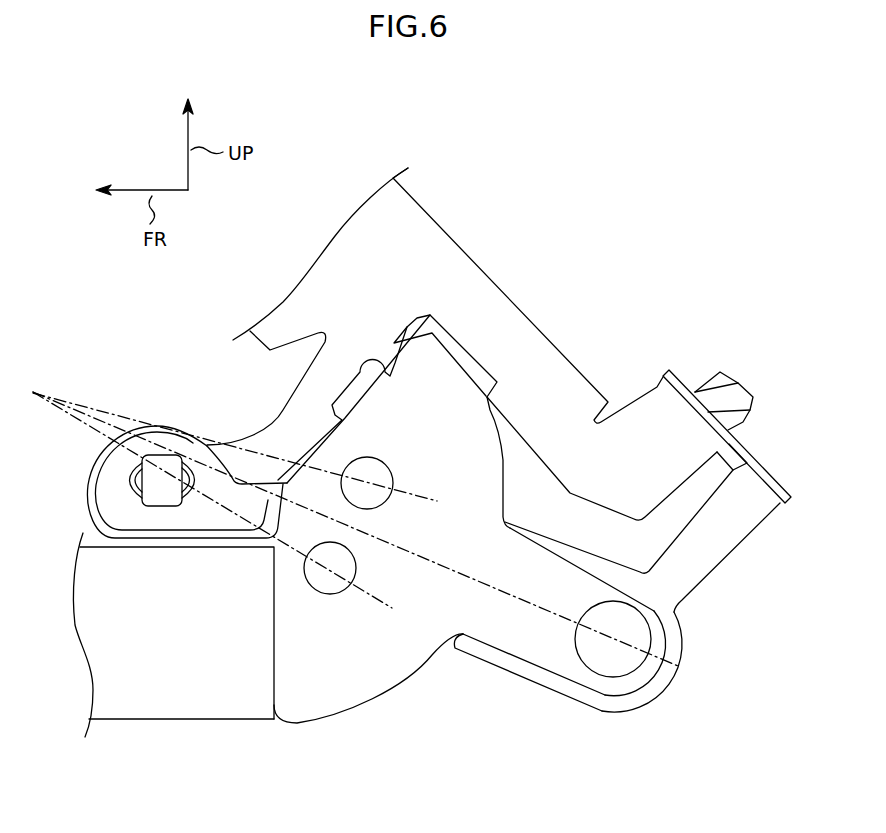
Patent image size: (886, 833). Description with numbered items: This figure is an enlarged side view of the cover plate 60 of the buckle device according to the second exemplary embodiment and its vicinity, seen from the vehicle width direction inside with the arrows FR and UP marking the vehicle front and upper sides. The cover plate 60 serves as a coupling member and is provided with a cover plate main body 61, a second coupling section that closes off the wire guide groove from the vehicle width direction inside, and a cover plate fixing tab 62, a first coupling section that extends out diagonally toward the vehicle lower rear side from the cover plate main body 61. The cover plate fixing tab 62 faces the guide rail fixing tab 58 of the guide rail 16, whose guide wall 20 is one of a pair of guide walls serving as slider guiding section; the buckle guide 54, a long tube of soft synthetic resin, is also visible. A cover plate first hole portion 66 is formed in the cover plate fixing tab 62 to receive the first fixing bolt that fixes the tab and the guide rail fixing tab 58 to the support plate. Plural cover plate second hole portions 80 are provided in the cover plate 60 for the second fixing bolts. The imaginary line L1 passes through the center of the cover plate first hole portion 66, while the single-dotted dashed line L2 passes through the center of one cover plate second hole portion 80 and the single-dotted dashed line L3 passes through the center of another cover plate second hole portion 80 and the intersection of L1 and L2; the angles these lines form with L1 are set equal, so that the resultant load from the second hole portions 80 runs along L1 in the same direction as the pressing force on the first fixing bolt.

The guide rail 16 is at (154, 720).
The guide wall 20 is at (226, 720).
The buckle guide 54 is at (471, 260).
The guide rail fixing tab 58 is at (585, 701).
The cover plate 60 is at (316, 720).
The cover plate main body 61 is at (380, 698).
The cover plate fixing tab 62 is at (518, 658).
The cover plate first hole portion 66 is at (588, 616).
The cover plate second hole portion 80 is at (368, 458).
The imaginary line L1 is at (433, 560).
The single-dotted dashed line L2 is at (416, 492).
The single-dotted dashed line L3 is at (378, 601).